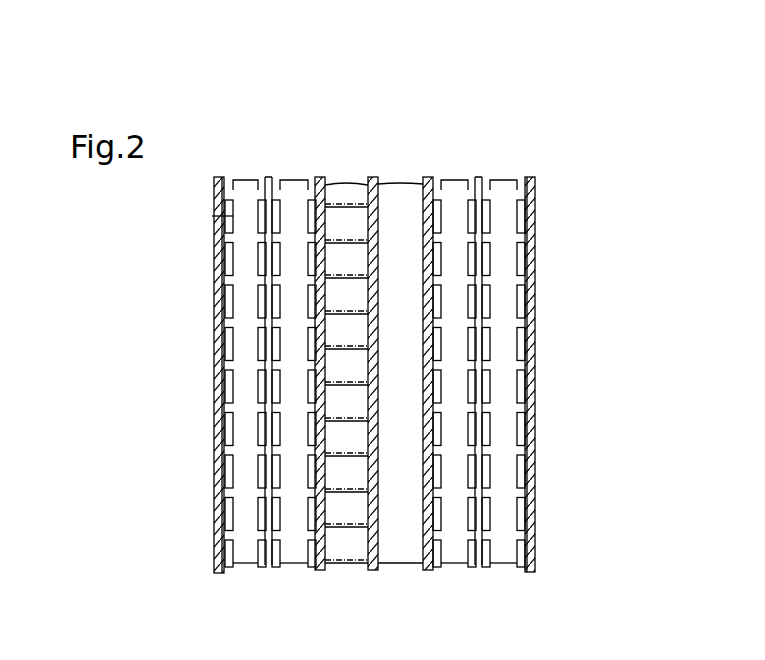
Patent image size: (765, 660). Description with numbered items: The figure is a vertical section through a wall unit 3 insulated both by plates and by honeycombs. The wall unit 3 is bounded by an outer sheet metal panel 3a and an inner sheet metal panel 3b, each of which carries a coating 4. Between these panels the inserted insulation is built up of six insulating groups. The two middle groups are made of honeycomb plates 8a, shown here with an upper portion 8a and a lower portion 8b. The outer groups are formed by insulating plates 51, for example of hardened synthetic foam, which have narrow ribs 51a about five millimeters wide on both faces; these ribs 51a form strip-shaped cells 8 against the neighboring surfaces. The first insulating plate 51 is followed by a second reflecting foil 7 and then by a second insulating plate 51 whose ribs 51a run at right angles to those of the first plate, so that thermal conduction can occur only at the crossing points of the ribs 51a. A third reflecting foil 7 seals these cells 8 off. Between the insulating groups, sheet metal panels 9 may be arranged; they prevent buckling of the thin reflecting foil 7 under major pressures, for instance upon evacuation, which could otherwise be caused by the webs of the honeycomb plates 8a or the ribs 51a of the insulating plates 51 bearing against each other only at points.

The wall unit 3 is at (555, 433).
The outer sheet metal panel 3a is at (213, 248).
The inner sheet metal panel 3b is at (532, 250).
The coating 4 is at (213, 302).
The reflecting foil 7 is at (268, 176).
The strip-shaped cell 8 is at (224, 216).
The honeycomb plate 8a is at (405, 190).
The lower electrode section 8b is at (402, 547).
The sheet metal panel 9 is at (320, 180).
The insulating plate 51 is at (503, 190).
The rib 51a is at (230, 366).